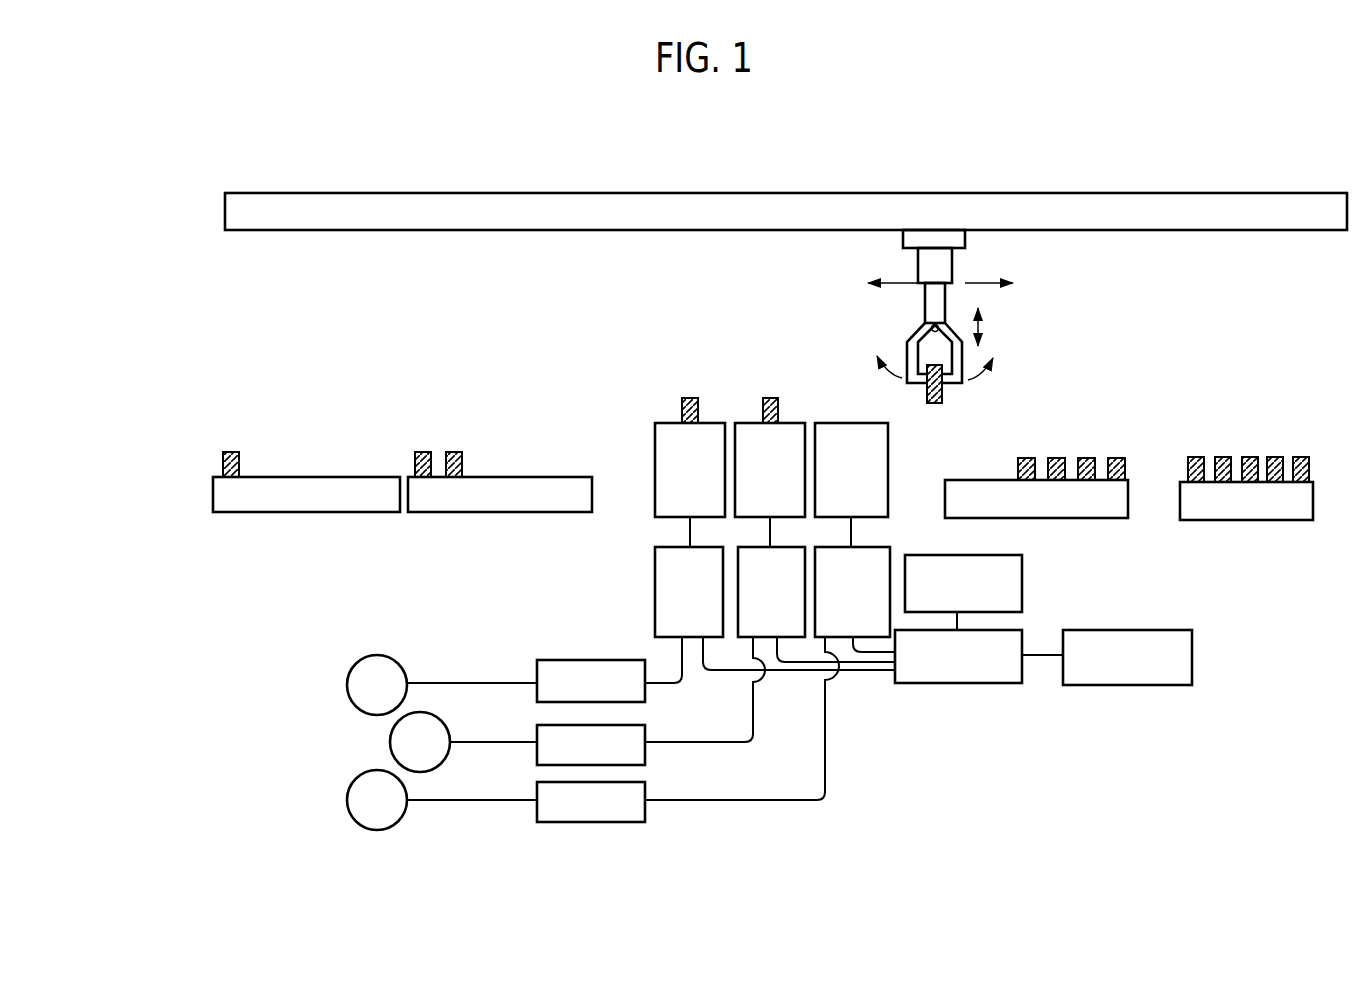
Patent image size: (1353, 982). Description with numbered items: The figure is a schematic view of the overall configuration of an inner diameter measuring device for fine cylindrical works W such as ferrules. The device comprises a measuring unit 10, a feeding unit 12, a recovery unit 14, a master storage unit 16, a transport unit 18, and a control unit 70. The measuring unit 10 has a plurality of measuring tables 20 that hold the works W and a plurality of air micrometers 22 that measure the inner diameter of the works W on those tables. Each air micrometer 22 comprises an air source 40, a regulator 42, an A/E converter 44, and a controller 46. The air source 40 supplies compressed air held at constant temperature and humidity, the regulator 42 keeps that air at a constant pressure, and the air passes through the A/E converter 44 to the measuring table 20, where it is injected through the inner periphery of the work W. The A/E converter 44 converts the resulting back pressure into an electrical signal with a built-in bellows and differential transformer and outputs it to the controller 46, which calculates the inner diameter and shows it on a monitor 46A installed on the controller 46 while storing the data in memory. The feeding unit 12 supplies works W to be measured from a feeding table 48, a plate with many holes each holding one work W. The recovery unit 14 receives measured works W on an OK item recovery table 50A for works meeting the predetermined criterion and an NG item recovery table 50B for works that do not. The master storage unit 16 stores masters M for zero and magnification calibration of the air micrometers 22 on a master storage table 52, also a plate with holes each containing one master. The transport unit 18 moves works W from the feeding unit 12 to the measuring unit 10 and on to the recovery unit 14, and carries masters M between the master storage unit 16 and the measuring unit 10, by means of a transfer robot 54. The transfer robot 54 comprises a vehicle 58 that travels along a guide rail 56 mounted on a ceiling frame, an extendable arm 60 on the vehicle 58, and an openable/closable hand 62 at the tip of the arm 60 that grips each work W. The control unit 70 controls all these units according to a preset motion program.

The measuring unit 10 is at (640, 338).
The feeding unit 12 is at (1079, 398).
The recovery unit 14 is at (367, 388).
The master storage unit 16 is at (1291, 378).
The transport unit 18 is at (1090, 160).
The measuring table 20 is at (663, 422).
The air micrometer 22 is at (924, 760).
The air source 40 is at (358, 660).
The regulator 42 is at (645, 697).
The A/E converter 44 is at (655, 610).
The controller 46 is at (972, 685).
The monitor 46A is at (1022, 585).
The feeding table 48 is at (1097, 507).
The OK item recovery table 50A is at (530, 507).
The NG item recovery table 50B is at (365, 505).
The master storage table 52 is at (1262, 507).
The transfer robot 54 is at (1018, 326).
The guide rail 56 is at (792, 194).
The vehicle 58 is at (944, 238).
The extendable arm 60 is at (915, 260).
The hand 62 is at (915, 335).
The control unit 70 is at (1150, 688).
The work W is at (935, 405).
The master M is at (1200, 457).